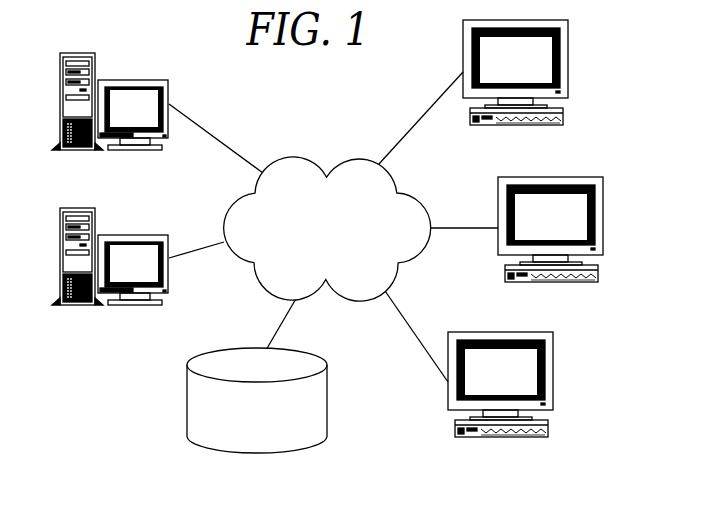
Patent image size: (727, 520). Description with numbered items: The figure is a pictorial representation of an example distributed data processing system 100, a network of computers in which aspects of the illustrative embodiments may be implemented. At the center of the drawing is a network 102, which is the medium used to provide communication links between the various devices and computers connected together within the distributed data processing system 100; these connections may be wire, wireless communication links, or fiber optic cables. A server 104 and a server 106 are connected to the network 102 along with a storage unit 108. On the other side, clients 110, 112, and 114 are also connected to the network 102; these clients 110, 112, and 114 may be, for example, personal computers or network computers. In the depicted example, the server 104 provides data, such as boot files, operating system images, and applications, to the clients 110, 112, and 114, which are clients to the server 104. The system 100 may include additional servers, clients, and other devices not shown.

The distributed data processing system 100 is at (141, 381).
The network 102 is at (295, 159).
The server 104 is at (130, 80).
The server 106 is at (130, 235).
The storage unit 108 is at (328, 389).
The client 110 is at (569, 66).
The client 112 is at (604, 222).
The client 114 is at (554, 379).